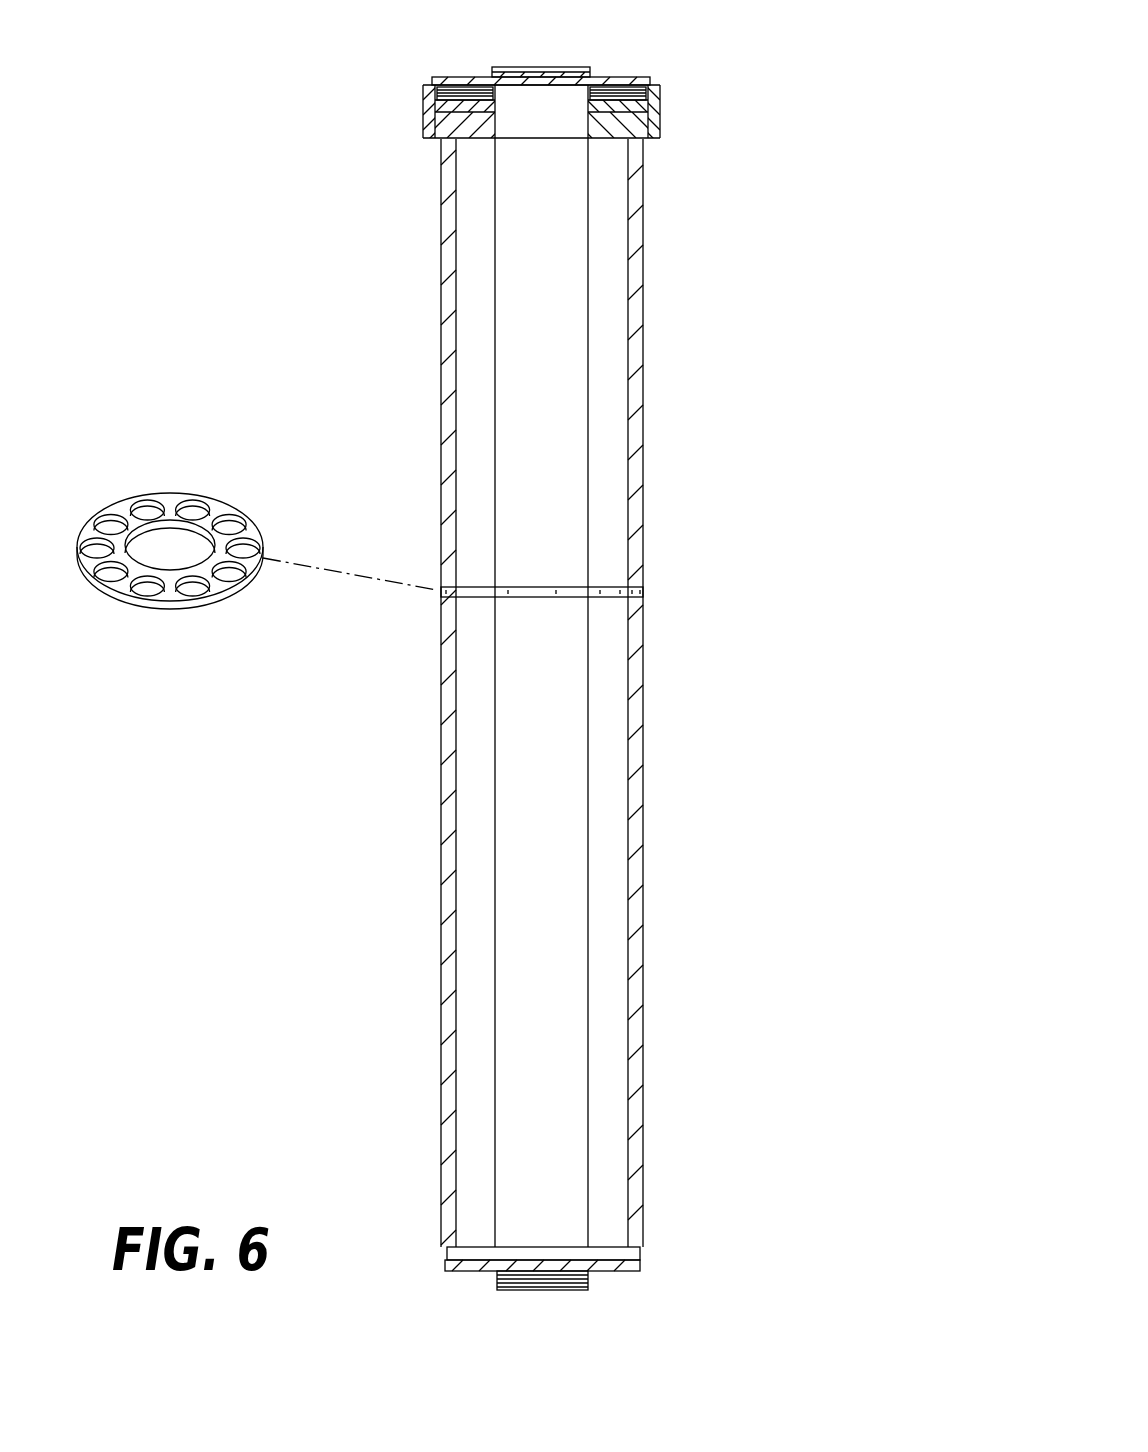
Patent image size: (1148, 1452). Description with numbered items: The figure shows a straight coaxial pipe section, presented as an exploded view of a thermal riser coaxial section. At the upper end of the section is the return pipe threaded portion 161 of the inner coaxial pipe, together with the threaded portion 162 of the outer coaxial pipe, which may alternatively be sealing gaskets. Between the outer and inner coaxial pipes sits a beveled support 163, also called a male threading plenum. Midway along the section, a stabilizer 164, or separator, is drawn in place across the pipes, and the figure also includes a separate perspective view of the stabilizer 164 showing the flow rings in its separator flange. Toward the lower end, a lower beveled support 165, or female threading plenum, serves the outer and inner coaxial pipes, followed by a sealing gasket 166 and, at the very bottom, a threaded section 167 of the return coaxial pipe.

The return pipe threaded portion 161 is at (596, 60).
The threaded portion of the outer coaxial pipe 162 is at (686, 83).
The beveled support 163 is at (622, 110).
The stabilizer 164 is at (663, 591).
The lower beveled support 165 is at (598, 1243).
The sealing gasket 166 is at (645, 1273).
The threaded section of the return coaxial pipe 167 is at (596, 1285).